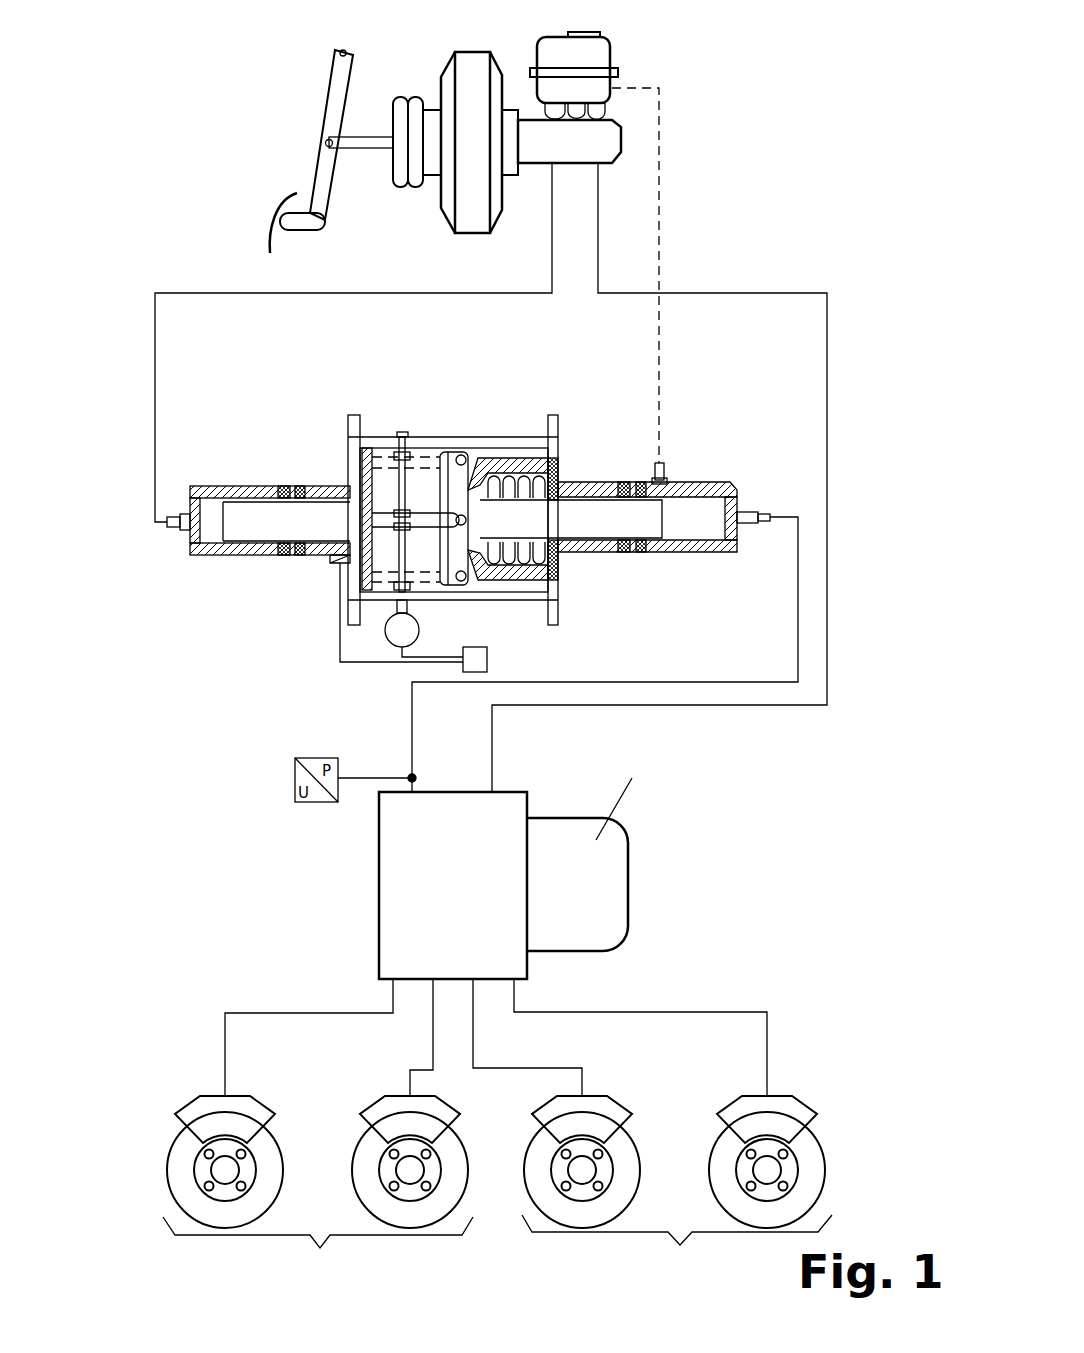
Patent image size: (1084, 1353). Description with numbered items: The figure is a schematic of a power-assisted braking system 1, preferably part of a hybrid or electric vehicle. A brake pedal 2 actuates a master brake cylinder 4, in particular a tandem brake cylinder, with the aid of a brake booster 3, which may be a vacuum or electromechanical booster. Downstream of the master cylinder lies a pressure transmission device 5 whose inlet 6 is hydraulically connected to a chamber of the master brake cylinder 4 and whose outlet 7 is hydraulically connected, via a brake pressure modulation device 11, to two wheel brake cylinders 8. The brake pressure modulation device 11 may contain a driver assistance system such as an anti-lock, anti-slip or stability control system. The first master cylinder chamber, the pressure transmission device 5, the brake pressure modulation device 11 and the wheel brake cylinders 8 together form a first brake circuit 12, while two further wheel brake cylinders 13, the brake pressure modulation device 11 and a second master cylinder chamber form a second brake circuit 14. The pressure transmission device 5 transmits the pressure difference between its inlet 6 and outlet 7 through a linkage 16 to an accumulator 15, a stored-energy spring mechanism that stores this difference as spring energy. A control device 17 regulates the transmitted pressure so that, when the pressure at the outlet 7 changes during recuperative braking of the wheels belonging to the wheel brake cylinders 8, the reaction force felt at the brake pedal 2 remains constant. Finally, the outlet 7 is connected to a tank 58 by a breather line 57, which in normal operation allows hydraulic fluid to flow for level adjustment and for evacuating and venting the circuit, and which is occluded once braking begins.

The power-assisted braking system 1 is at (164, 99).
The brake pedal 2 is at (295, 193).
The brake booster 3 is at (460, 75).
The master brake cylinder 4 is at (606, 145).
The tank 58 is at (598, 47).
The breather line 57 is at (659, 240).
The pressure transmission device 5 is at (235, 600).
The inlet 6 is at (205, 490).
The outlet 7 is at (715, 483).
The accumulator 15 is at (520, 470).
The linkage 16 is at (387, 452).
The control device 17 is at (487, 653).
The brake pressure modulation device 11 is at (395, 887).
The wheel brake cylinders 8 is at (193, 1110).
The wheel brake cylinders 13 is at (613, 1108).
The first brake circuit 12 is at (318, 1249).
The second brake circuit 14 is at (677, 1246).